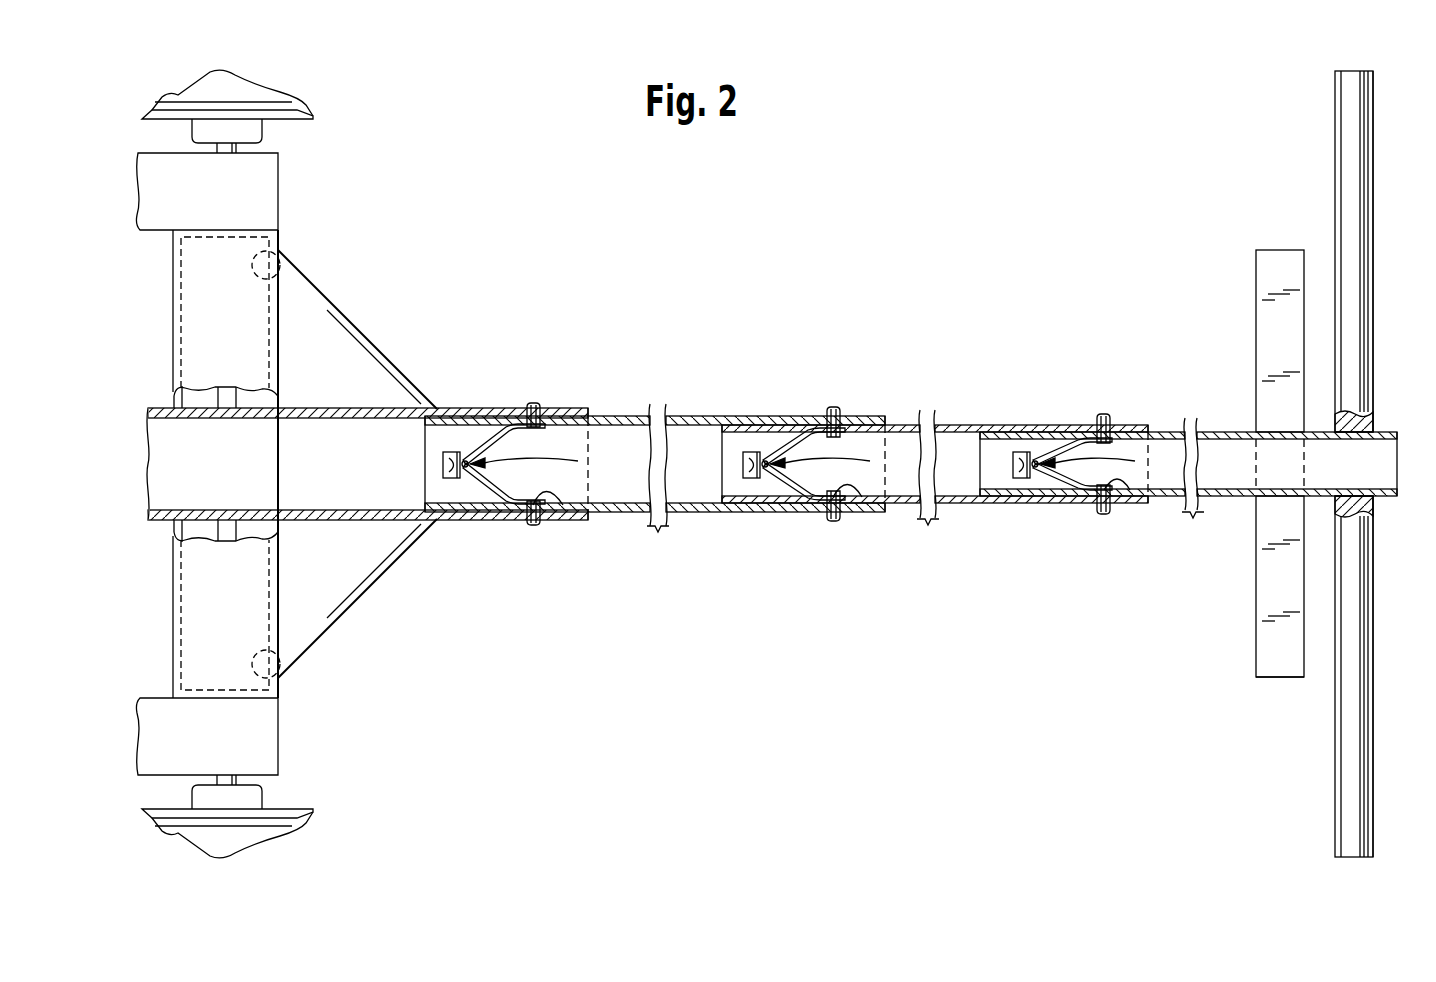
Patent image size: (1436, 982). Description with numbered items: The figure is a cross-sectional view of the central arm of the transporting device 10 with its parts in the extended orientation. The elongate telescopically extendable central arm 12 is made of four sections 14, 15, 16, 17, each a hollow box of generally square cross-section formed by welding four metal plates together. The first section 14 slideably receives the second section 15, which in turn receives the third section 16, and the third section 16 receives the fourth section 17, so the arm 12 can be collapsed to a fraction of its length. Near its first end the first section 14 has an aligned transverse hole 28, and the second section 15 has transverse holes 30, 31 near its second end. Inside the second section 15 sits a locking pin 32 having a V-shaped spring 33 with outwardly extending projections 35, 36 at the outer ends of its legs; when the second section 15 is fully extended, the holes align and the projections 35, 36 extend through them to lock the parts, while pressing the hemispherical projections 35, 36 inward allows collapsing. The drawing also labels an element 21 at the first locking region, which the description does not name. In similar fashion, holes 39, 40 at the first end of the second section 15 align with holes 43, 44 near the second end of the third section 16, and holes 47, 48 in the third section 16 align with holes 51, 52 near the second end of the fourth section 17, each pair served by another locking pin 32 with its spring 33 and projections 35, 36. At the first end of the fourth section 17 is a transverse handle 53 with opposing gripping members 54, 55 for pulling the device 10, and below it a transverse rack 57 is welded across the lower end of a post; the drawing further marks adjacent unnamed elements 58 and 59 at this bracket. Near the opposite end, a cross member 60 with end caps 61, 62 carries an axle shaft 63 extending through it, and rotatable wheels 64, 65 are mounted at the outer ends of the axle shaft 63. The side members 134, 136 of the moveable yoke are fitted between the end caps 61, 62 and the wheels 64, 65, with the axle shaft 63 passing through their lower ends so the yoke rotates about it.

The transporting device 10 is at (677, 254).
The central arm 12 is at (748, 597).
The first section 14 is at (447, 407).
The second section 15 is at (646, 413).
The third section 16 is at (926, 423).
The fourth section 17 is at (1218, 431).
The first locking clip 21 is at (546, 522).
The transverse hole 28 is at (547, 421).
The transverse hole 30 is at (577, 408).
The transverse hole 31 is at (566, 510).
The locking pin 32 is at (590, 470).
The V-shaped spring 33 is at (484, 503).
The projection 35 is at (531, 403).
The projection 36 is at (533, 527).
The transverse hole 39 is at (845, 424).
The transverse hole 40 is at (845, 510).
The transverse hole 43 is at (875, 416).
The transverse hole 44 is at (866, 505).
The hole 47 is at (1113, 431).
The hole 48 is at (1116, 502).
The transverse hole 51 is at (1140, 424).
The transverse hole 52 is at (1133, 498).
The transverse handle 53 is at (1372, 605).
The gripping member 54 is at (1335, 129).
The gripping member 55 is at (1335, 812).
The transverse rack 57 is at (1258, 649).
The upper bracket block 58 is at (1278, 250).
The bracket block end 59 is at (1275, 678).
The cross member 60 is at (279, 296).
The end cap 61 is at (292, 264).
The end cap 62 is at (292, 665).
The axle shaft 63 is at (245, 390).
The wheel 64 is at (308, 118).
The wheel 65 is at (286, 813).
The side member 134 is at (266, 777).
The side member 136 is at (278, 154).